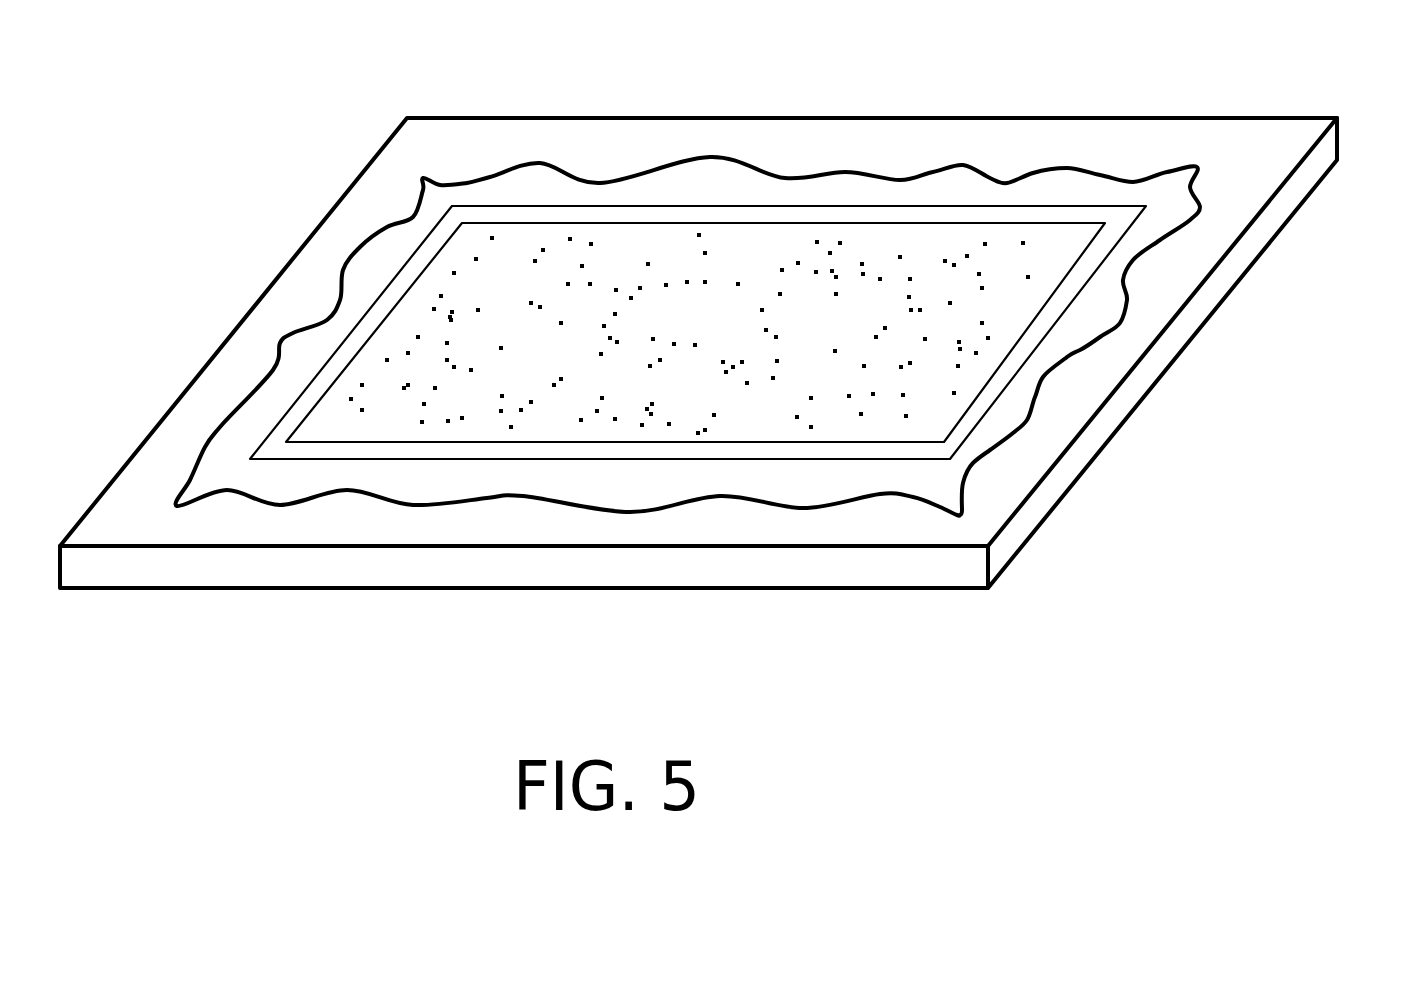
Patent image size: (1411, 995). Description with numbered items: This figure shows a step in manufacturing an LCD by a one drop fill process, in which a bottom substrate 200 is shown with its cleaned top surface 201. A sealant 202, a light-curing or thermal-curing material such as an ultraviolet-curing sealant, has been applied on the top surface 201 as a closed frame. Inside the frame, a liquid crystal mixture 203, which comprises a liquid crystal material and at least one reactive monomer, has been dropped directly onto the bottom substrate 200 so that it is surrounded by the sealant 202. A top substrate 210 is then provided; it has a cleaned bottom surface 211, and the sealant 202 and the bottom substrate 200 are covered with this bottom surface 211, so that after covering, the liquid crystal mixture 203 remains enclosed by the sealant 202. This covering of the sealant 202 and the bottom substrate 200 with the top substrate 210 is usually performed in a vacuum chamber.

The bottom substrate 200 is at (729, 314).
The top surface 201 is at (1142, 140).
The sealant 202 is at (980, 392).
The liquid crystal mixture 203 is at (598, 245).
The top substrate 210 is at (688, 276).
The bottom surface 211 is at (762, 193).